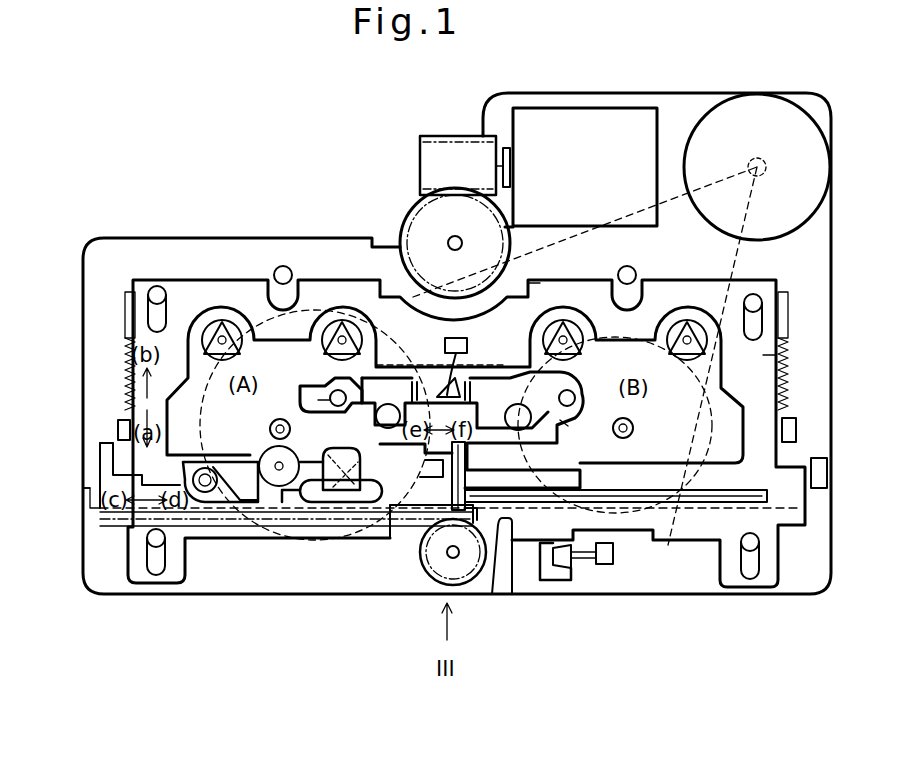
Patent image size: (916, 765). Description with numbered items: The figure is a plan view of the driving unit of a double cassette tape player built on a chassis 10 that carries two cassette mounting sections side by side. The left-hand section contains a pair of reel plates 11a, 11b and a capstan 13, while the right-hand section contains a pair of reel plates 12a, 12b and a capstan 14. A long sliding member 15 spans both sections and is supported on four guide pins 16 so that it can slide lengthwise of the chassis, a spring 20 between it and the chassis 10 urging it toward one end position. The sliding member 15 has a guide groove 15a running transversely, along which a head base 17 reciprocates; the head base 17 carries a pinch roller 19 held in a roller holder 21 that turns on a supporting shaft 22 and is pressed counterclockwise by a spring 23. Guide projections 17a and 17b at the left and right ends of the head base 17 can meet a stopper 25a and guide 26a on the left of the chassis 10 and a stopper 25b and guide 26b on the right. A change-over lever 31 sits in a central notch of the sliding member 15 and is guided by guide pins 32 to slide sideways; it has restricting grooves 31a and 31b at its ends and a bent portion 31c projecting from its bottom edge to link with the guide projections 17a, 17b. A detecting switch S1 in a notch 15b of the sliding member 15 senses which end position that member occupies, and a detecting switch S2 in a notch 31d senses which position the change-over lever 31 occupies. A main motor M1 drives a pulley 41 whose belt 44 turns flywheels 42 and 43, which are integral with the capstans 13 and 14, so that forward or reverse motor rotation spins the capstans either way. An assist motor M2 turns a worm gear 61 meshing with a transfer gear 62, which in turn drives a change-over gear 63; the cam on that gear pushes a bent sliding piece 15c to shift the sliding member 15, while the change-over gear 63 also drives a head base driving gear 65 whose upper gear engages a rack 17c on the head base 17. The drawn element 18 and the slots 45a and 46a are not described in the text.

The chassis 10 is at (232, 245).
The reel plate 11a is at (222, 335).
The reel plate 11b is at (342, 335).
The reel plate 12a is at (565, 320).
The reel plate 12b is at (690, 325).
The capstan 13 is at (270, 431).
The capstan 14 is at (633, 430).
The sliding member 15 is at (766, 356).
The guide groove 15a is at (767, 497).
The notch 15b is at (565, 585).
The sliding piece 15c is at (512, 385).
The guide pin 16 is at (157, 295).
The head base 17 is at (298, 513).
The guide projection 17a is at (100, 450).
The guide projection 17b is at (498, 594).
The rack 17c is at (425, 530).
The block 18 is at (345, 490).
The pinch roller 19 is at (283, 462).
The spring 20 is at (125, 346).
The roller holder 21 is at (258, 492).
The supporting shaft 22 is at (200, 470).
The spring 23 is at (247, 505).
The stopper 25a is at (83, 488).
The stopper 25b is at (827, 472).
The guide 26a is at (118, 428).
The guide 26b is at (797, 430).
The change-over lever 31 is at (548, 440).
The restricting groove 31a is at (312, 393).
The restricting groove 31b is at (575, 398).
The bent portion 31c is at (455, 460).
The notch 31d is at (425, 392).
The guide pin 32 is at (388, 404).
The pulley 41 is at (770, 172).
The flywheel 42 is at (252, 350).
The flywheel 43 is at (706, 370).
The belt 44 is at (723, 170).
The slot 45a is at (318, 400).
The slot 46a is at (565, 425).
The worm gear 61 is at (435, 136).
The transfer gear 62 is at (423, 223).
The change-over gear 63 is at (537, 285).
The head base driving gear 65 is at (440, 585).
The main motor M1 is at (813, 160).
The assist motor M2 is at (567, 122).
The detecting switch S1 is at (605, 565).
The detecting switch S2 is at (457, 338).